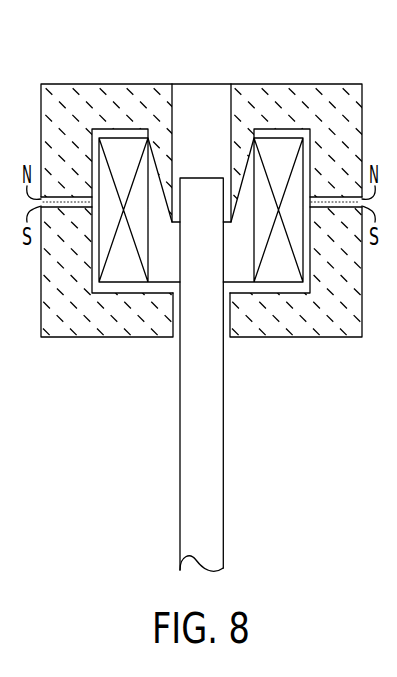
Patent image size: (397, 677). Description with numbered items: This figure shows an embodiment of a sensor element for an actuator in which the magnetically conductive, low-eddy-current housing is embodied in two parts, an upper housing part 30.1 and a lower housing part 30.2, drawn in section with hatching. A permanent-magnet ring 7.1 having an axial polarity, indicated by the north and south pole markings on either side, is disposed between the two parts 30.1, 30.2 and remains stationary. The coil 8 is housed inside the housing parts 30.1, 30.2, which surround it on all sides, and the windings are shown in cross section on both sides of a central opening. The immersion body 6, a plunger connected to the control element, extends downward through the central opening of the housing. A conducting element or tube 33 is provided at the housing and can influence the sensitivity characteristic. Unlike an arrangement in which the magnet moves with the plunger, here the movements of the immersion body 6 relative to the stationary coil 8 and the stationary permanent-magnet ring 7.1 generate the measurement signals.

The immersion body 6 is at (207, 380).
The permanent-magnet ring 7.1 is at (62, 203).
The coil 8 is at (125, 272).
The housing part 30.1 is at (281, 84).
The housing part 30.2 is at (315, 340).
The conducting element or tube 33 is at (230, 102).